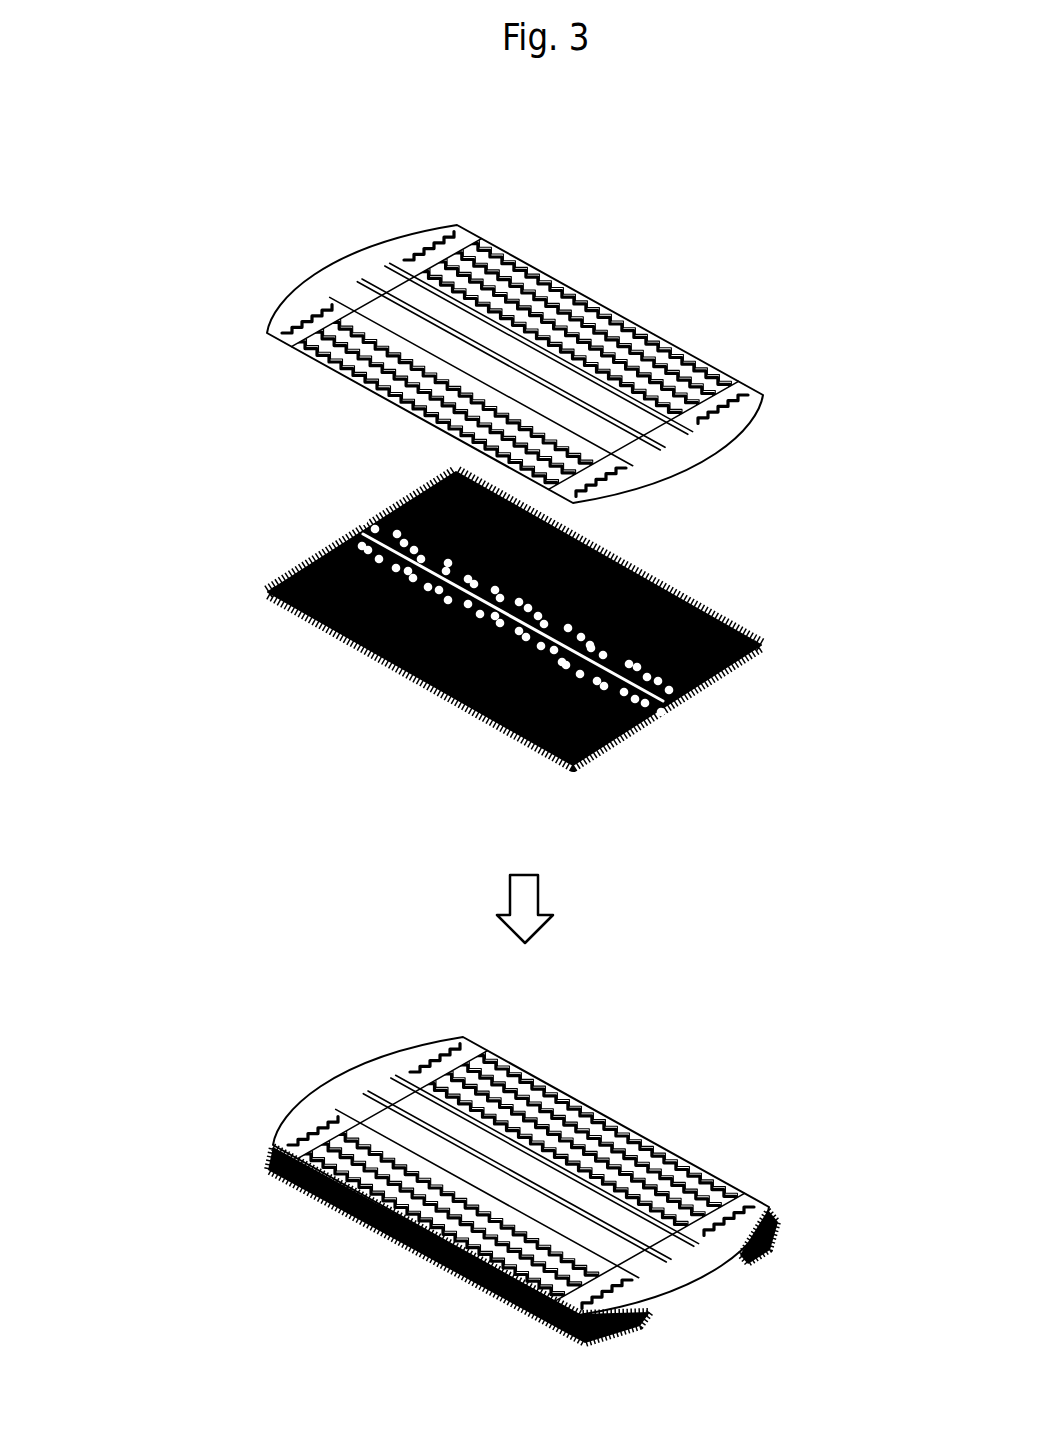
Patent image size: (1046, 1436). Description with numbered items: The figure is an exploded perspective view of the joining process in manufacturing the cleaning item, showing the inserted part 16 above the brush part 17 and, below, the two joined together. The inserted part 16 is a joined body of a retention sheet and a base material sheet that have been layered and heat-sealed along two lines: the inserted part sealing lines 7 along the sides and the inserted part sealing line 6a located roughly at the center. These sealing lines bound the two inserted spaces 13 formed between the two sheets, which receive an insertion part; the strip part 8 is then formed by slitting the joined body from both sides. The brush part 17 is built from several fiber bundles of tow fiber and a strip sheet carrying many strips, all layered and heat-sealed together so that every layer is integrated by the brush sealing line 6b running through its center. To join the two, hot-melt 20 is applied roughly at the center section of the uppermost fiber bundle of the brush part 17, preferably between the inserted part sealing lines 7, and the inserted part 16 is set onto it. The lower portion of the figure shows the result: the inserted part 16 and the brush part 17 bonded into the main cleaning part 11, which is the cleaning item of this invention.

The inserted part sealing line 7 is at (505, 336).
The inserted part sealing line 6a is at (571, 366).
The strip part 8 is at (515, 364).
The inserted space 13 is at (584, 387).
The inserted part 16 is at (518, 336).
The brush part 17 is at (518, 635).
The hot-melt 20 is at (658, 672).
The brush sealing line 6b is at (670, 700).
The main cleaning part 11 is at (290, 1120).